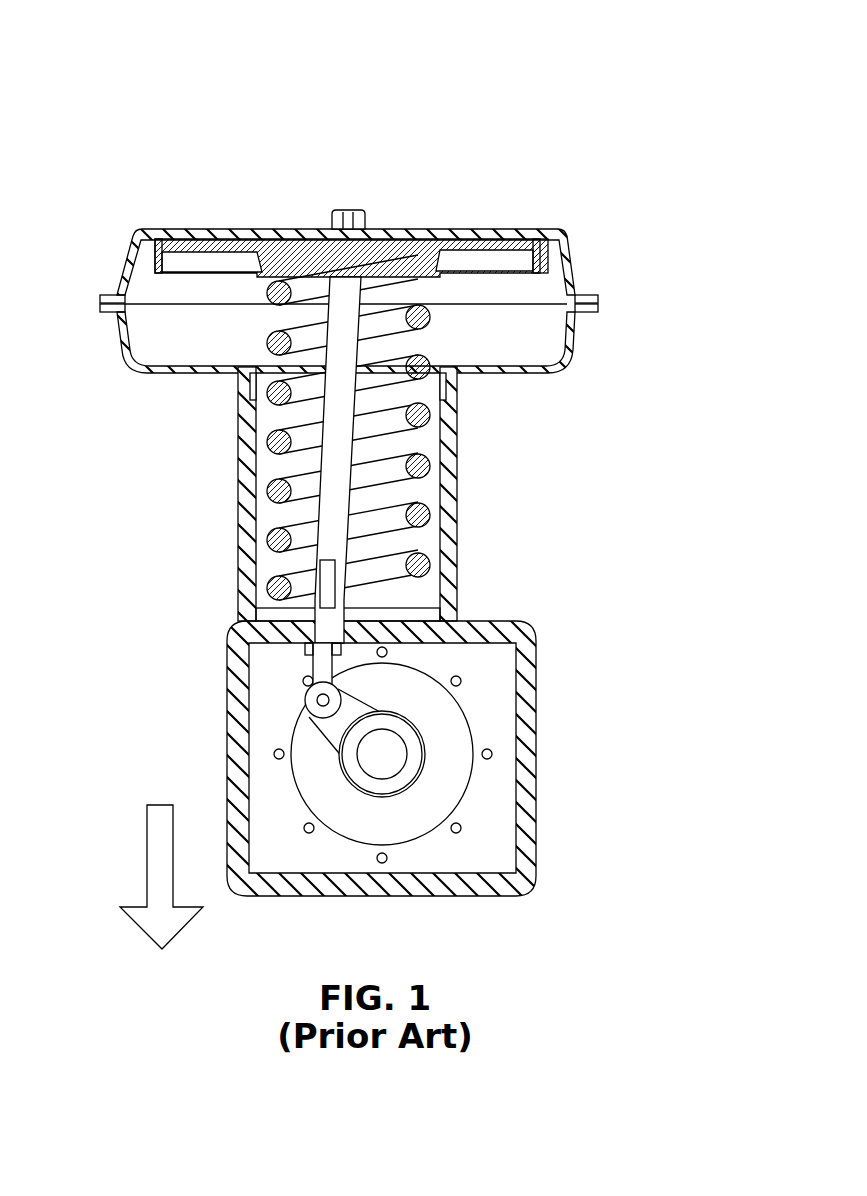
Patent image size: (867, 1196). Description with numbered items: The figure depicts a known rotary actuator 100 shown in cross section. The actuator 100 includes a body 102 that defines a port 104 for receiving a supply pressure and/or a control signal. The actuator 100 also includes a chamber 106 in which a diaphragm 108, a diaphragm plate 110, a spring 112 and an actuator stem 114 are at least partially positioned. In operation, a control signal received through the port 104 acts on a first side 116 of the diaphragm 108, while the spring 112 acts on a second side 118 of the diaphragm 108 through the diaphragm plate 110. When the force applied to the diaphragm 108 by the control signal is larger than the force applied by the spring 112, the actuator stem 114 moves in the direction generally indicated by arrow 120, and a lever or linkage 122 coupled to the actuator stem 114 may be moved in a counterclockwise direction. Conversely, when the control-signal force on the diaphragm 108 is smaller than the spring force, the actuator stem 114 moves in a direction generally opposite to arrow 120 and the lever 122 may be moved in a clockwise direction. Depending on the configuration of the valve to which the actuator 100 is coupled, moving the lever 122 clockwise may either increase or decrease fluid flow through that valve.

The rotary actuator 100 is at (636, 74).
The body 102 is at (458, 540).
The port 104 is at (358, 214).
The chamber 106 is at (545, 334).
The diaphragm 108 is at (470, 230).
The diaphragm plate 110 is at (543, 258).
The spring 112 is at (284, 492).
The actuator stem 114 is at (326, 548).
The first side 116 is at (215, 237).
The second side 118 is at (157, 252).
The arrow 120 is at (147, 838).
The lever or linkage 122 is at (306, 703).